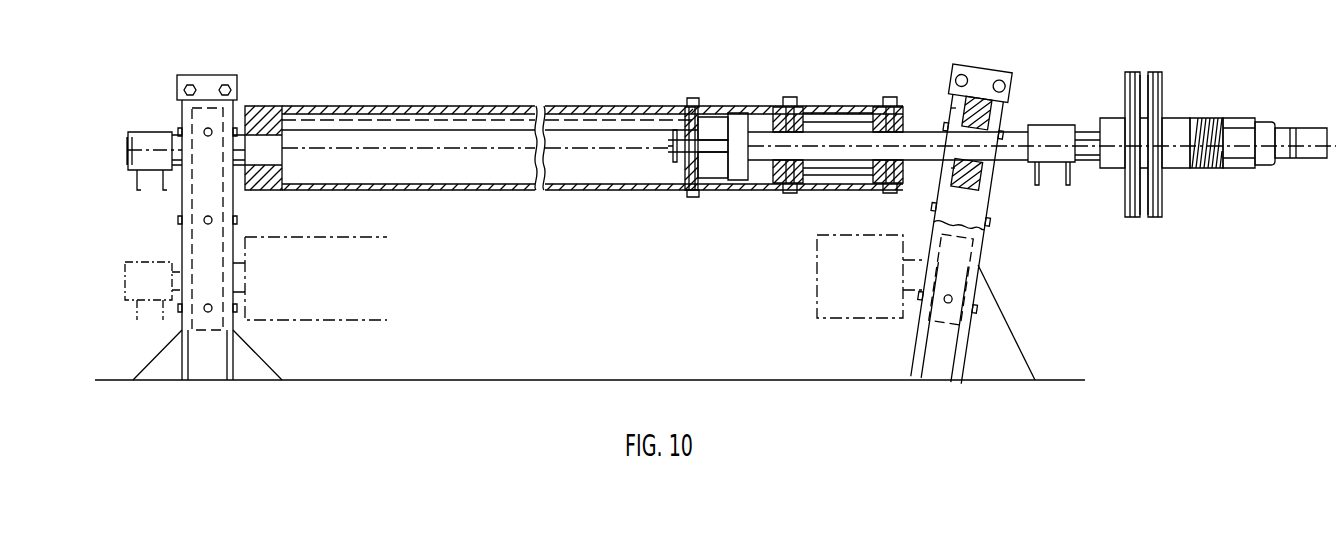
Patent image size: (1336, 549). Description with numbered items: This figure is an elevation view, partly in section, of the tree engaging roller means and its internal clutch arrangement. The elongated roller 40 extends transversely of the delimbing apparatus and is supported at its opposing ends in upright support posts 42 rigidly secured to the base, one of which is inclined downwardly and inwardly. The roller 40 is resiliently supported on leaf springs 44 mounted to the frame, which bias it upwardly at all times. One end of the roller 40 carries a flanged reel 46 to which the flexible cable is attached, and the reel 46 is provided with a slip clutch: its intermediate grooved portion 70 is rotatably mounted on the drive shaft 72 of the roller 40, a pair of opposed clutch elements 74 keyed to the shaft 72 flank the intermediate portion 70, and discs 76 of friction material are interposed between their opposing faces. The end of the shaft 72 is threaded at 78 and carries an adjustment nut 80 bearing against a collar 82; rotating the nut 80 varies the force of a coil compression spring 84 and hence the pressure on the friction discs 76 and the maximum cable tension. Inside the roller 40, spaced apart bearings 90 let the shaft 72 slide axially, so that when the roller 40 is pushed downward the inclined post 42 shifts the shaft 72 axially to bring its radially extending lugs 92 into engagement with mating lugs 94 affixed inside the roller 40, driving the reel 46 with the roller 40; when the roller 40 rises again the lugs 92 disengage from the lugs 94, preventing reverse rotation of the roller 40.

The roller 40 is at (598, 195).
The upright support post 42 is at (580, 224).
The leaf spring 44 is at (1051, 125).
The flanged reel 46 is at (1170, 144).
The intermediate grooved portion 70 is at (1143, 217).
The drive shaft 72 is at (1090, 130).
The clutch element 74 is at (1125, 88).
The friction disc 76 is at (1155, 72).
The threaded end 78 is at (1295, 158).
The adjustment nut 80 is at (1262, 165).
The collar 82 is at (1240, 168).
The coil compression spring 84 is at (1198, 168).
The bearing 90 is at (873, 178).
The lug 92 is at (739, 182).
The mating lug 94 is at (707, 182).